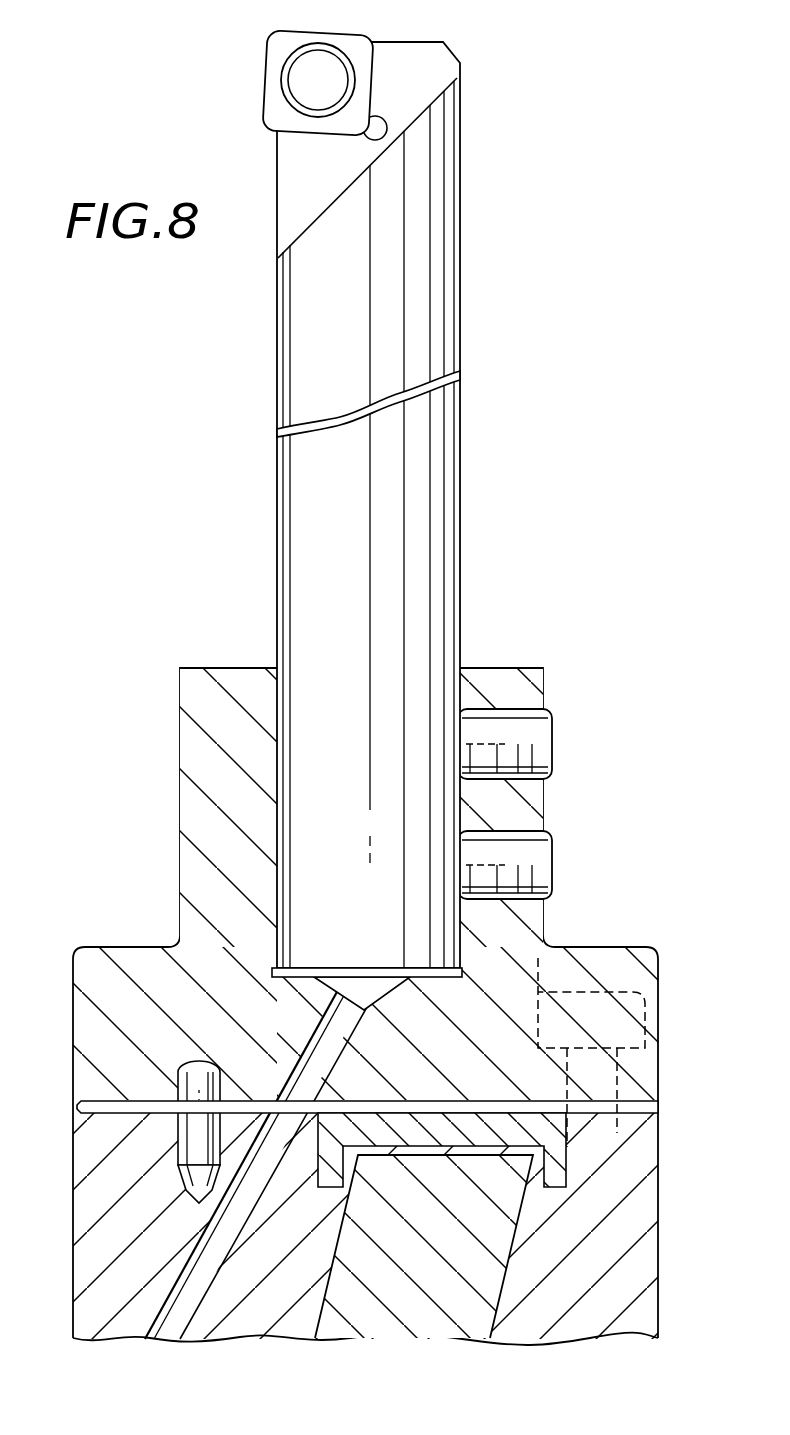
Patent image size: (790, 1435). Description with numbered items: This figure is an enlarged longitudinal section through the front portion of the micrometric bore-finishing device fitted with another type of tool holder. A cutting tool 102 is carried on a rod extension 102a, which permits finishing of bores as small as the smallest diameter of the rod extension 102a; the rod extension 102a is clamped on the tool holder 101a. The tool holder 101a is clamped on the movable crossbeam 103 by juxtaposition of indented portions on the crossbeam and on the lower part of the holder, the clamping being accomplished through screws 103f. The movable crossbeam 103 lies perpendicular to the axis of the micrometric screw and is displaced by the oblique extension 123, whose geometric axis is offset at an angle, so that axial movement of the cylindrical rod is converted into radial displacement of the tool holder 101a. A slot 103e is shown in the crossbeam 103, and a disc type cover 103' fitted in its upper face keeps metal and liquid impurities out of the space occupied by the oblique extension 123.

The cutting tool 102 is at (268, 63).
The rod extension 102a is at (440, 428).
The tool holder 101a is at (503, 682).
The movable crossbeam 103 is at (365, 1029).
The slot 103e is at (645, 1099).
The screws 103f is at (618, 975).
The disc type cover 103' is at (519, 1150).
The oblique extension 123 is at (415, 1322).